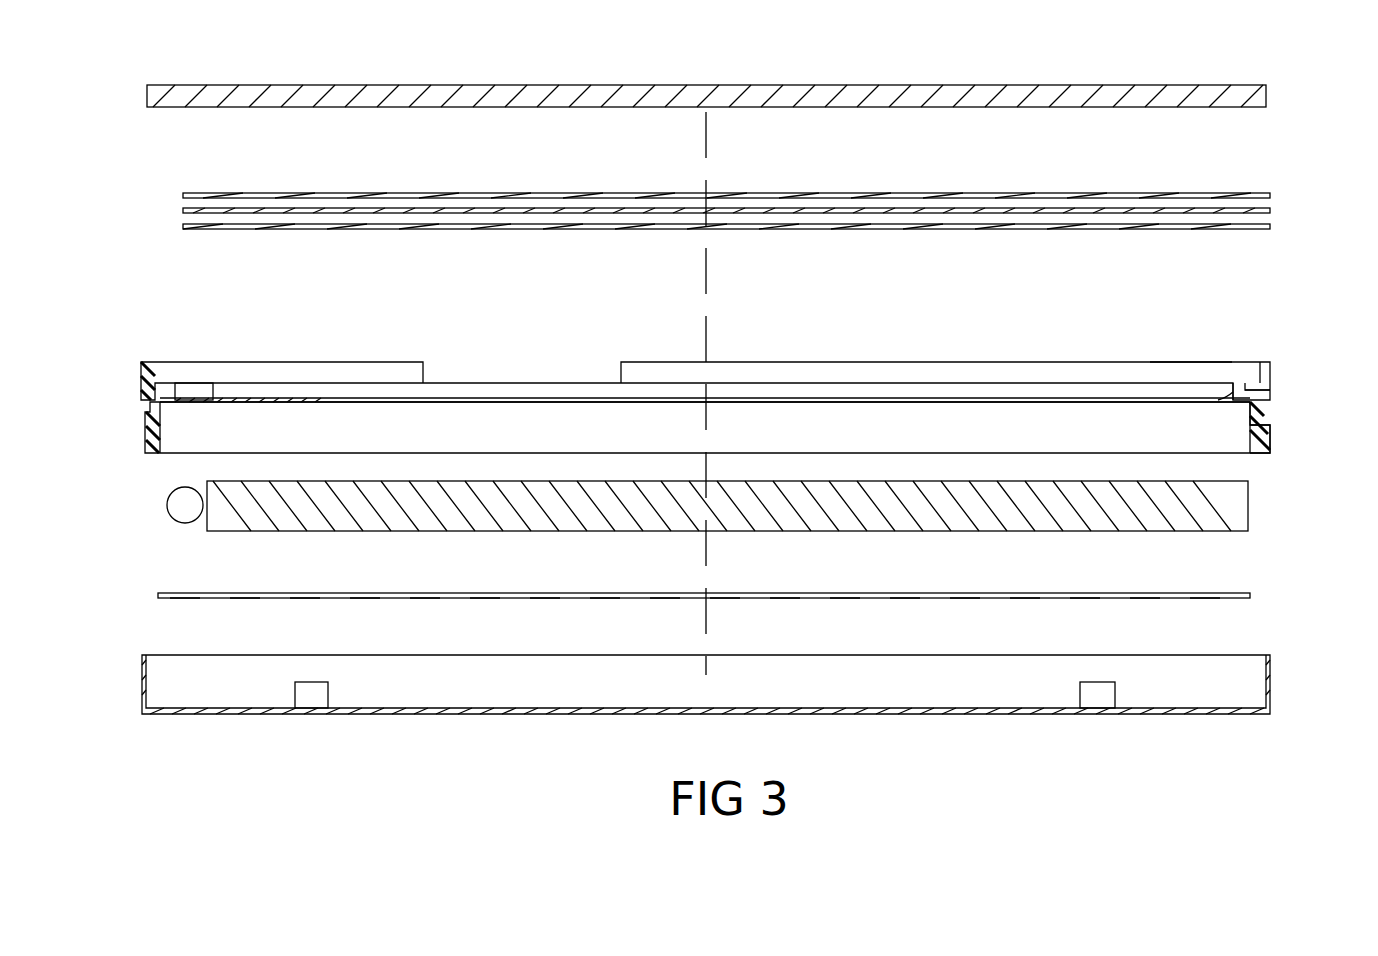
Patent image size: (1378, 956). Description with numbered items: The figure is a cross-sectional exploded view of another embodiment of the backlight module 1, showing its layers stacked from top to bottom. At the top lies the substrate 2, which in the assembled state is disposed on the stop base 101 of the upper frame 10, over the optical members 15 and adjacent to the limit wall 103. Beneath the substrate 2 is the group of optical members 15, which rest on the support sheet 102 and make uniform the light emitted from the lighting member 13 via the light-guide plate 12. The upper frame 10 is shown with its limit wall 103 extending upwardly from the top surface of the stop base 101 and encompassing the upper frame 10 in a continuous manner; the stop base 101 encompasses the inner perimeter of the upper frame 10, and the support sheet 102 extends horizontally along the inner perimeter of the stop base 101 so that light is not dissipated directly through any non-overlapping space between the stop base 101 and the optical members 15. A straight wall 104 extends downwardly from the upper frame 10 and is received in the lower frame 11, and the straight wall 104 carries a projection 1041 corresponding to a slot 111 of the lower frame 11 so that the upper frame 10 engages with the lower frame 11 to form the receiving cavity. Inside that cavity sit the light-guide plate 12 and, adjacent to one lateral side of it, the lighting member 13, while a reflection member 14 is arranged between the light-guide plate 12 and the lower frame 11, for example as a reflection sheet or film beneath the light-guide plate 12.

The backlight module 1 is at (97, 193).
The substrate 2 is at (1266, 95).
The upper frame 10 is at (747, 344).
The stop base 101 is at (1243, 388).
The support sheet 102 is at (1222, 398).
The limit wall 103 is at (1192, 370).
The straight wall 104 is at (759, 440).
The projection 1041 is at (1270, 435).
The lower frame 11 is at (750, 719).
The slot 111 is at (1098, 690).
The light-guide plate 12 is at (1240, 507).
The lighting member 13 is at (177, 503).
The reflection member 14 is at (1250, 595).
The optical members 15 is at (1276, 193).